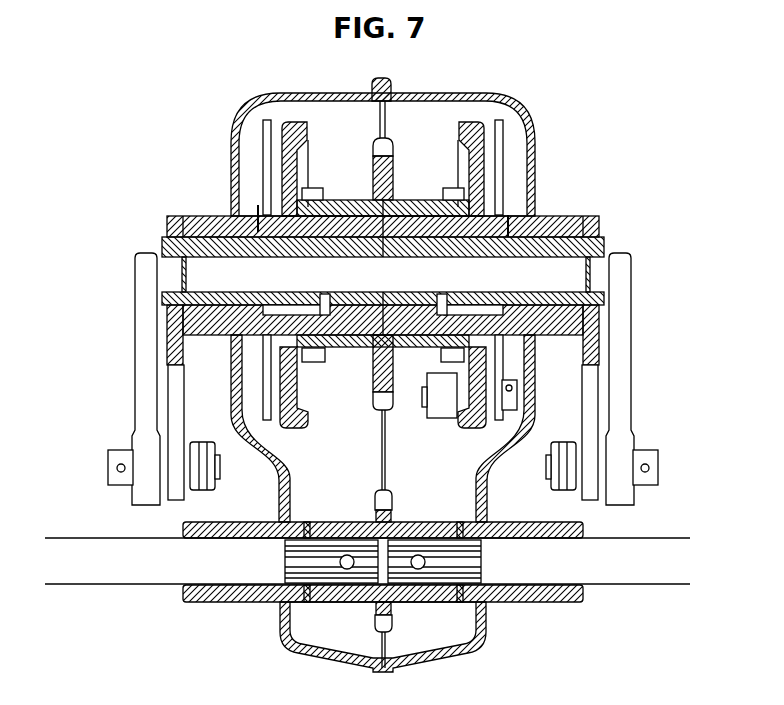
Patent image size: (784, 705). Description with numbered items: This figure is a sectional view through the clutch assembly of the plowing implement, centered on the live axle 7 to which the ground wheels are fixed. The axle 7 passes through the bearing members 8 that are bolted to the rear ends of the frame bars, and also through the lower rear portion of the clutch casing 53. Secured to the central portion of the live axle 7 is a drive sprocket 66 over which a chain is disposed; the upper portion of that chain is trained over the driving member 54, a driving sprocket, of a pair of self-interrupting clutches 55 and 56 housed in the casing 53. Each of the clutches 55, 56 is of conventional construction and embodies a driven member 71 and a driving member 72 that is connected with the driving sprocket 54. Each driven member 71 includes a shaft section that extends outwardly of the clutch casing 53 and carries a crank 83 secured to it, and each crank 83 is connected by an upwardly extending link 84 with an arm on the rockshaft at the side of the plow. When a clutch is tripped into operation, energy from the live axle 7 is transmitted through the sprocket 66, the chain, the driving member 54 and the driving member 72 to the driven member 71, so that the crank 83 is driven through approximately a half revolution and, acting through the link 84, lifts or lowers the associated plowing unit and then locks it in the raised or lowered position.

The live axle 7 is at (138, 578).
The bearing member 8 is at (240, 602).
The clutch casing 53 is at (529, 175).
The driving member 54 is at (390, 174).
The self-interrupting clutch 55 is at (512, 130).
The self-interrupting clutch 56 is at (250, 157).
The drive sprocket 66 is at (393, 502).
The driven member 71 is at (293, 127).
The driving member 72 is at (328, 188).
The crank 83 is at (179, 402).
The link 84 is at (141, 353).